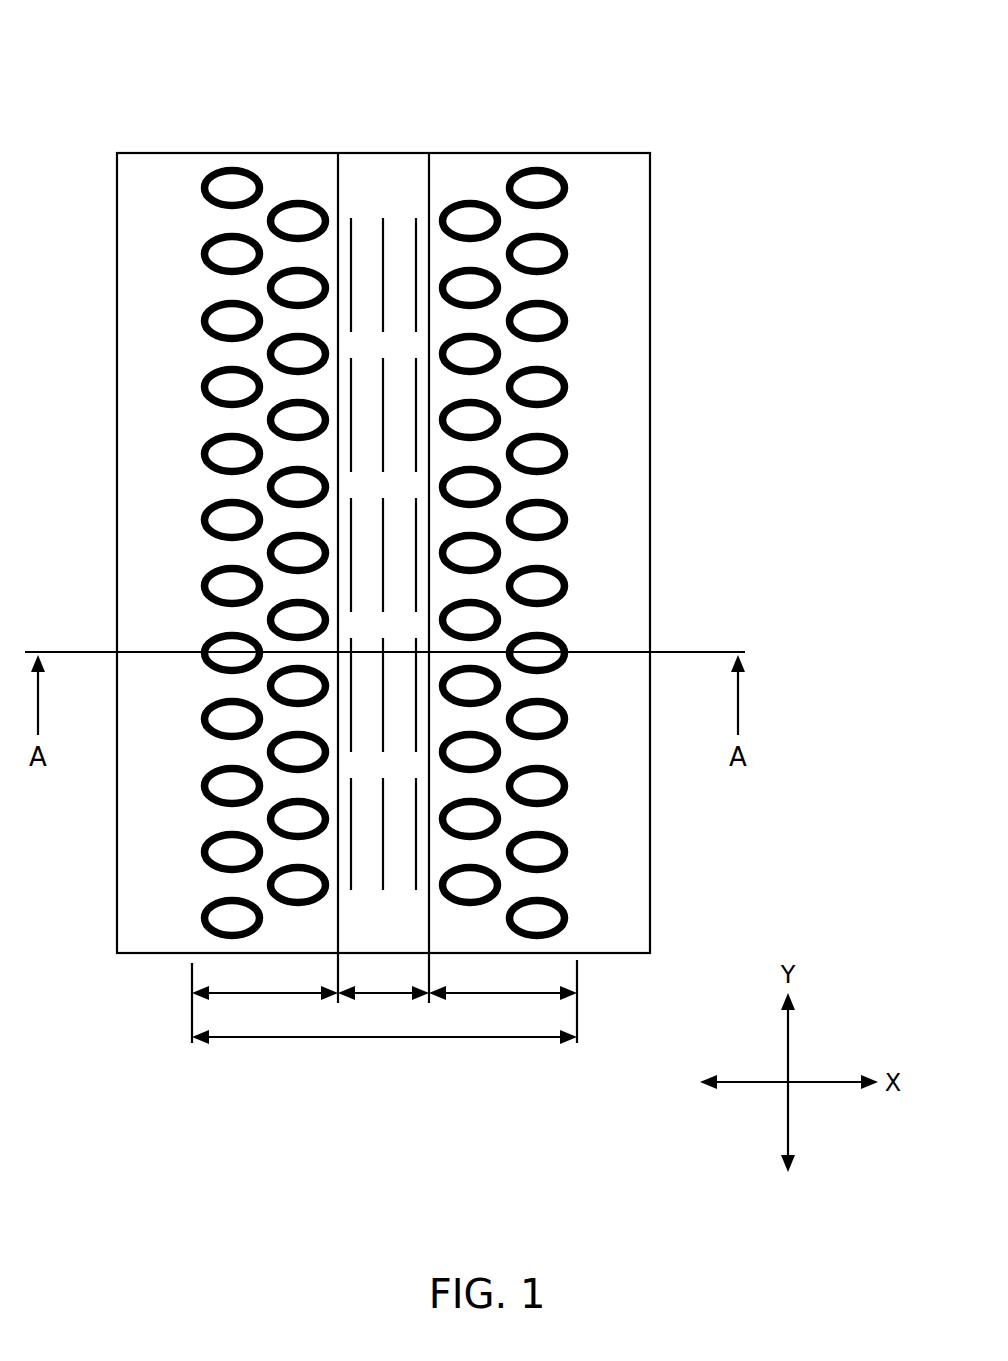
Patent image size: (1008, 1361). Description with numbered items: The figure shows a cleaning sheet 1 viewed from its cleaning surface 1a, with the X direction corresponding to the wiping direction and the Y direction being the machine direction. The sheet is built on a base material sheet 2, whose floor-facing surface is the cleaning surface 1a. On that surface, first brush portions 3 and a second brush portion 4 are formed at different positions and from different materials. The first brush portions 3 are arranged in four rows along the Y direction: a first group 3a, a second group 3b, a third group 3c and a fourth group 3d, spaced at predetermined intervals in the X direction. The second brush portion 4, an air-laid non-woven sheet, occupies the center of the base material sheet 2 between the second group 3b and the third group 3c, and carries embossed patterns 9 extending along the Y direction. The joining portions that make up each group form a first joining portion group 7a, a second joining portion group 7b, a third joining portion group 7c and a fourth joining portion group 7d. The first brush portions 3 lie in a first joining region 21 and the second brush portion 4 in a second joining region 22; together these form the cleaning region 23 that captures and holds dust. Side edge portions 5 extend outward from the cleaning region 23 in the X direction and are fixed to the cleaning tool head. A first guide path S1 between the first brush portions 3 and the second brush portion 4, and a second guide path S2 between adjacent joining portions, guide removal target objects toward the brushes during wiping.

The cleaning sheet 1 is at (686, 117).
The cleaning surface 1a is at (637, 268).
The base material sheet 2 is at (628, 153).
The first brush portions 3 is at (205, 184).
The first group of the first brush portions 3a is at (216, 155).
The second group of the first brush portions 3b is at (304, 188).
The third group of the first brush portions 3c is at (461, 180).
The fourth group of the first brush portions 3d is at (522, 145).
The second brush portion 4 is at (386, 165).
The side edge portions 5 is at (135, 545).
The first joining portion group 7a is at (208, 948).
The second joining portion group 7b is at (248, 884).
The third joining portion group 7c is at (518, 883).
The fourth joining portion group 7d is at (582, 929).
The patterns 9 is at (416, 803).
The first joining region 21 is at (265, 995).
The second joining region 22 is at (385, 995).
The cleaning region 23 is at (412, 1040).
The first guide path S1 is at (340, 213).
The second guide path S2 is at (258, 290).